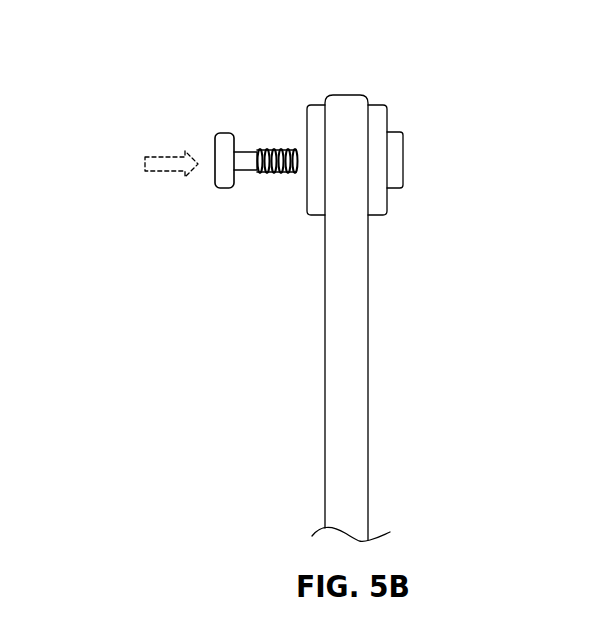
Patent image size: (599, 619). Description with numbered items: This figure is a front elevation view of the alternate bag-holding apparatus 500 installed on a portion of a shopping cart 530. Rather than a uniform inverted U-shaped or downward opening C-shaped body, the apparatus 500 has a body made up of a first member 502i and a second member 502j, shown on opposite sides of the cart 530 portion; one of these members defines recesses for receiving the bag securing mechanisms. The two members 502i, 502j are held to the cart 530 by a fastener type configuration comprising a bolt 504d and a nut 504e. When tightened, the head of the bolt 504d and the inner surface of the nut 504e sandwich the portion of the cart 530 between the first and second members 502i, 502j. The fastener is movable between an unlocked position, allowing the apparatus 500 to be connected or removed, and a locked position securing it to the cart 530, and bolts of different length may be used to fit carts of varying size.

The apparatus 500 is at (146, 56).
The cart 530 is at (358, 347).
The first member 502i is at (313, 193).
The second member 502j is at (378, 200).
The bolt 504d is at (220, 133).
The nut 504e is at (400, 160).